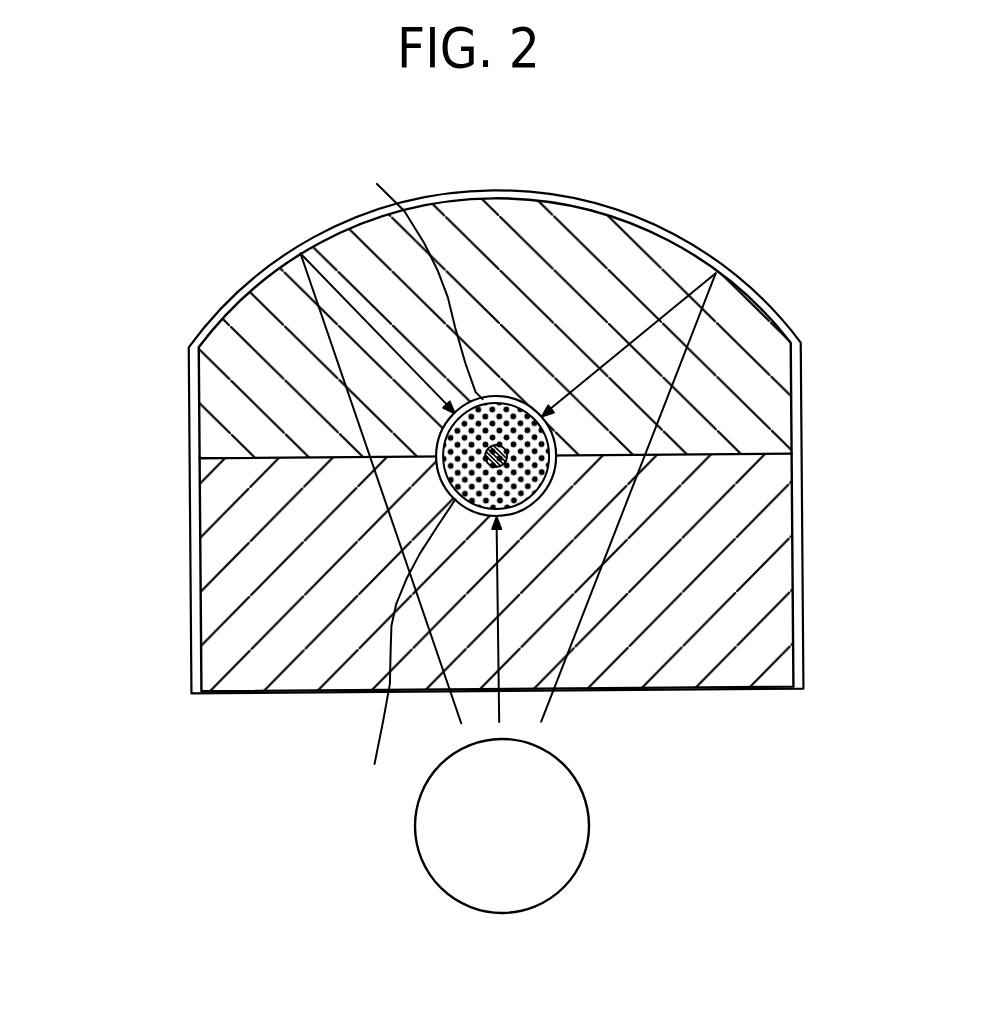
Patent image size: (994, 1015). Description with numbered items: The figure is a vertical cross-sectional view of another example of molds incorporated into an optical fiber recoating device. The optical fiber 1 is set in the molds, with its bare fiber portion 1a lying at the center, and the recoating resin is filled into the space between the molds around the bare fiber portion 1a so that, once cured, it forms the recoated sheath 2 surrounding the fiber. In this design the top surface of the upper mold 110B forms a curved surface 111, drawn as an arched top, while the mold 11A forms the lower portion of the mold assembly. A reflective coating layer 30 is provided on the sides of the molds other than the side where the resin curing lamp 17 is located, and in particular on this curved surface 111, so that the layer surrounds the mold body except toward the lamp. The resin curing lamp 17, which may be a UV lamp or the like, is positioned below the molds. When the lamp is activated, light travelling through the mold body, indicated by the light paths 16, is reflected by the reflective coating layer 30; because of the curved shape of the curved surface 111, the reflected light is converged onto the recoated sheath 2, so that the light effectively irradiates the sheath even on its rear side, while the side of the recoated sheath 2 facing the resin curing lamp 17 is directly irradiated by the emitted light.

The optical fiber 1 is at (341, 600).
The bare fiber portion 1a is at (491, 311).
The recoated sheath 2 is at (495, 354).
The light path 16 is at (421, 475).
The resin curing lamp 17 is at (417, 856).
The reflective coating layer 30 is at (612, 214).
The upper mold 110B is at (199, 395).
The curved surface 111 is at (355, 253).
The mold 11A is at (199, 671).